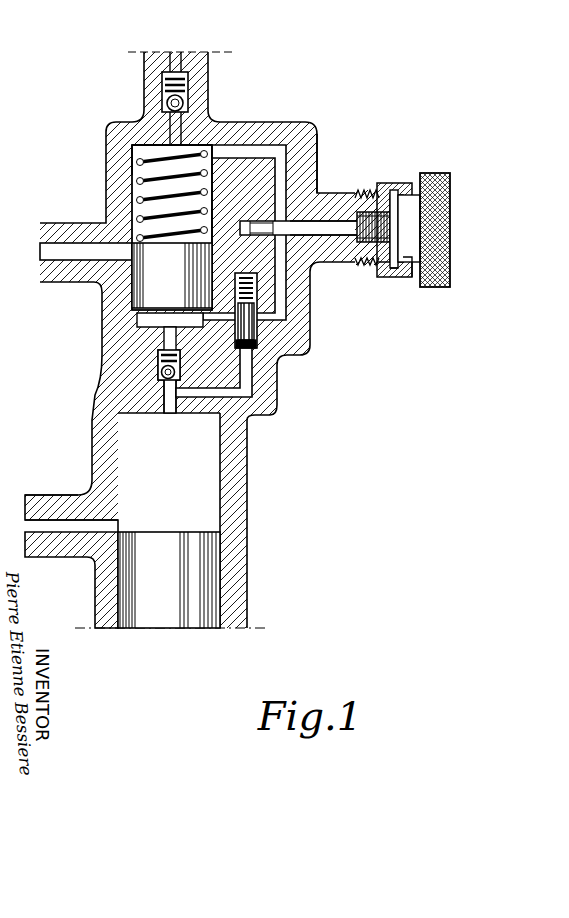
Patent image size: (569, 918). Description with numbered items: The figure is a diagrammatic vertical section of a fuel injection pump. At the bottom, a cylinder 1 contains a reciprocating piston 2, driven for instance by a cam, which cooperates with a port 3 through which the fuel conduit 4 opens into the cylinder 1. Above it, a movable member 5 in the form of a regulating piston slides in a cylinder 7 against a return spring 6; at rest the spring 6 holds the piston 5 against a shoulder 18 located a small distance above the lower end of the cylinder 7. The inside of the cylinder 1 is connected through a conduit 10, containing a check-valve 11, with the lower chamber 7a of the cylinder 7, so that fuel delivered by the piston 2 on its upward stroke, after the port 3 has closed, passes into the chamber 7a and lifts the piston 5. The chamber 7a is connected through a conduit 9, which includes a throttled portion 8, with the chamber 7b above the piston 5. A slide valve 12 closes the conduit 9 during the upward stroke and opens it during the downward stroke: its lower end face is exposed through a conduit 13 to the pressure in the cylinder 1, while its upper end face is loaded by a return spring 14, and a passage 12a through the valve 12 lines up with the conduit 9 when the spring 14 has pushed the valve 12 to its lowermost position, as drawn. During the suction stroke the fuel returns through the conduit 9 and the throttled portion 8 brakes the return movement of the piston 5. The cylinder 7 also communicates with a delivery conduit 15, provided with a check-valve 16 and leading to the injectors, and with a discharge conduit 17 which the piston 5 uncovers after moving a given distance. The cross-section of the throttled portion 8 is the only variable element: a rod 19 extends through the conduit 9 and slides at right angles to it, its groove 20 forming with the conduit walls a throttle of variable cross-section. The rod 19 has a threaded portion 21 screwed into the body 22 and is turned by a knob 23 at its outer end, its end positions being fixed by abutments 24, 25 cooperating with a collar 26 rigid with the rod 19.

The cylinder 1 is at (218, 470).
The piston 2 is at (197, 550).
The port 3 is at (118, 529).
The fuel conduit 4 is at (68, 528).
The movable member 5 is at (150, 278).
The return spring 6 is at (140, 178).
The cylinder 7 is at (134, 207).
The lower chamber 7a is at (128, 333).
The chamber 7b is at (138, 160).
The throttled portion 8 is at (314, 205).
The conduit 9 is at (238, 150).
The conduit 10 is at (165, 402).
The check-valve 11 is at (158, 373).
The valve 12 is at (247, 340).
The passage 12a is at (250, 325).
The conduit 13 is at (223, 393).
The return spring 14 is at (253, 280).
The delivery conduit 15 is at (183, 122).
The check-valve 16 is at (170, 100).
The discharge conduit 17 is at (78, 250).
The shoulder 18 is at (136, 315).
The rod 19 is at (334, 218).
The groove 20 is at (297, 152).
The threaded portion 21 is at (381, 215).
The body 22 is at (332, 218).
The knob 23 is at (450, 217).
The abutment 24 is at (407, 183).
The abutment 25 is at (403, 278).
The collar 26 is at (413, 278).